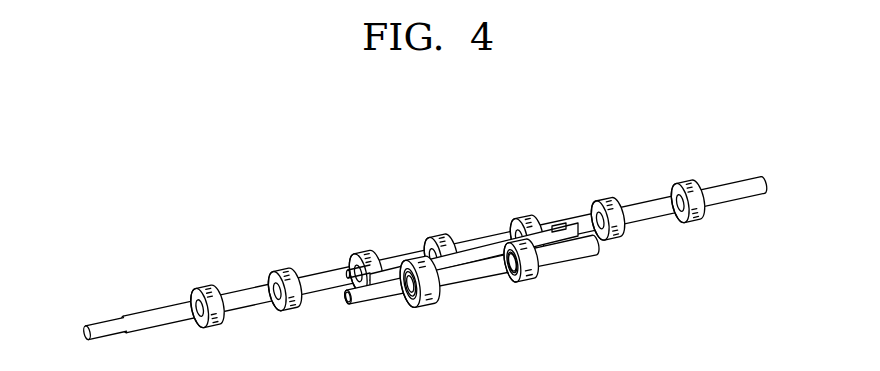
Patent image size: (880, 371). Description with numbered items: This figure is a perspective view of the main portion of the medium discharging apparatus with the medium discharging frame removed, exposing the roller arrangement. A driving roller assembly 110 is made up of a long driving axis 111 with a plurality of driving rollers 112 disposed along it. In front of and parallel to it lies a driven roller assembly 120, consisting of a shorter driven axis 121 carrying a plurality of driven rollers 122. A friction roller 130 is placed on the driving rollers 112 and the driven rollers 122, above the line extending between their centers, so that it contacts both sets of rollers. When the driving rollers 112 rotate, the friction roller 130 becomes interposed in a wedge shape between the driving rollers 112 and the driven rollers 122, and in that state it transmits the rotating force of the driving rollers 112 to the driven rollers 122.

The driving roller assembly 110 is at (425, 218).
The driving axis 111 is at (653, 200).
The driving rollers 112 is at (667, 129).
The driven roller assembly 120 is at (472, 299).
The driven axis 121 is at (482, 268).
The driven rollers 122 is at (530, 326).
The friction roller 130 is at (487, 244).